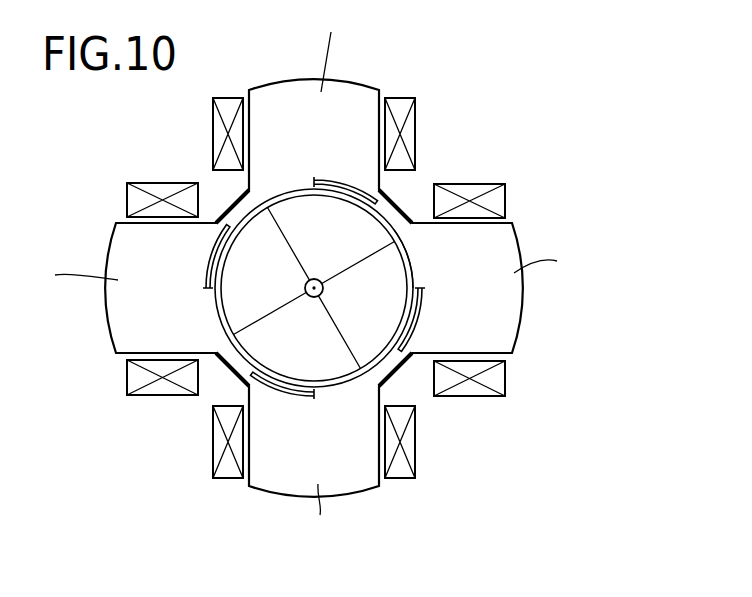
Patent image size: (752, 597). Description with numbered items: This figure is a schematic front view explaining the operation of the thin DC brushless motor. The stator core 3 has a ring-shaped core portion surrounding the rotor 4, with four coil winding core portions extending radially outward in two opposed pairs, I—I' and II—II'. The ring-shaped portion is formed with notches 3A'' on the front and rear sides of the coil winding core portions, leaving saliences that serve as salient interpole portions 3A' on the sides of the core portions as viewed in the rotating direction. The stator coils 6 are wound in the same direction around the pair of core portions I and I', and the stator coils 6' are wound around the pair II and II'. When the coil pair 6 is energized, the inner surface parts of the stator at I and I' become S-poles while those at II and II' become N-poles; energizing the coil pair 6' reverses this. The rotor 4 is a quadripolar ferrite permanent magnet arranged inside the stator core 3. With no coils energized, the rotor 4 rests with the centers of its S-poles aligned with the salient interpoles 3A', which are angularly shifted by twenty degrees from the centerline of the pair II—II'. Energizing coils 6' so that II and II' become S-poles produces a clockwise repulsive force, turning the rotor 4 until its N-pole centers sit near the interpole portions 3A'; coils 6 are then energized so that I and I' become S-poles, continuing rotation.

The stator core 3 is at (530, 316).
The salient interpole portion 3A' is at (329, 348).
The notch 3A'' is at (494, 247).
The rotor 4 is at (252, 343).
The stator coil 6 is at (341, 323).
The stator coil 6' is at (309, 332).
The coil winding core portion I is at (328, 49).
The coil winding core portion I' is at (321, 516).
The coil winding core portion II is at (543, 260).
The coil winding core portion II' is at (77, 277).